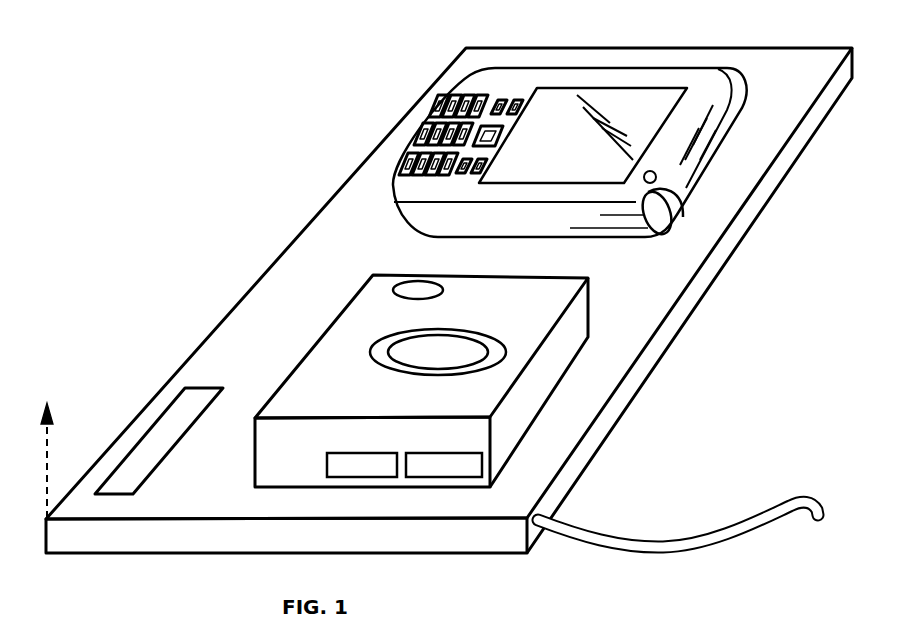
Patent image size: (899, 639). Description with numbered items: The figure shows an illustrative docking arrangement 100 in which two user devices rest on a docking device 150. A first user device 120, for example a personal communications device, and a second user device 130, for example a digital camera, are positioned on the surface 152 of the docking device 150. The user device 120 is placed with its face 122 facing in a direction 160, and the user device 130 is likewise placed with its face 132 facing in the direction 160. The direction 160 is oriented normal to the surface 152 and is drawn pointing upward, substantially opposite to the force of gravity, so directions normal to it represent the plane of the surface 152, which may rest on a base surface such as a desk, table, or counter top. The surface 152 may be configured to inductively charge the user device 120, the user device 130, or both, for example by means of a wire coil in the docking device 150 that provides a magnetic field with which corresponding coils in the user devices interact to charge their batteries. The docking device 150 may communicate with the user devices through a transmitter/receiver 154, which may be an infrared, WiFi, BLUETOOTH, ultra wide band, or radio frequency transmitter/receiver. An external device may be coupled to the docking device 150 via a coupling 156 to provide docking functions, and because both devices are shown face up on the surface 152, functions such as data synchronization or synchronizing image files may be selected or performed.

The docking arrangement 100 is at (311, 106).
The user device 120 is at (570, 125).
The face 122 is at (516, 176).
The user device 130 is at (413, 346).
The face 132 is at (484, 306).
The docking device 150 is at (449, 283).
The surface 152 is at (764, 88).
The transmitter/receiver 154 is at (188, 389).
The coupling 156 is at (797, 498).
The direction 160 is at (47, 444).